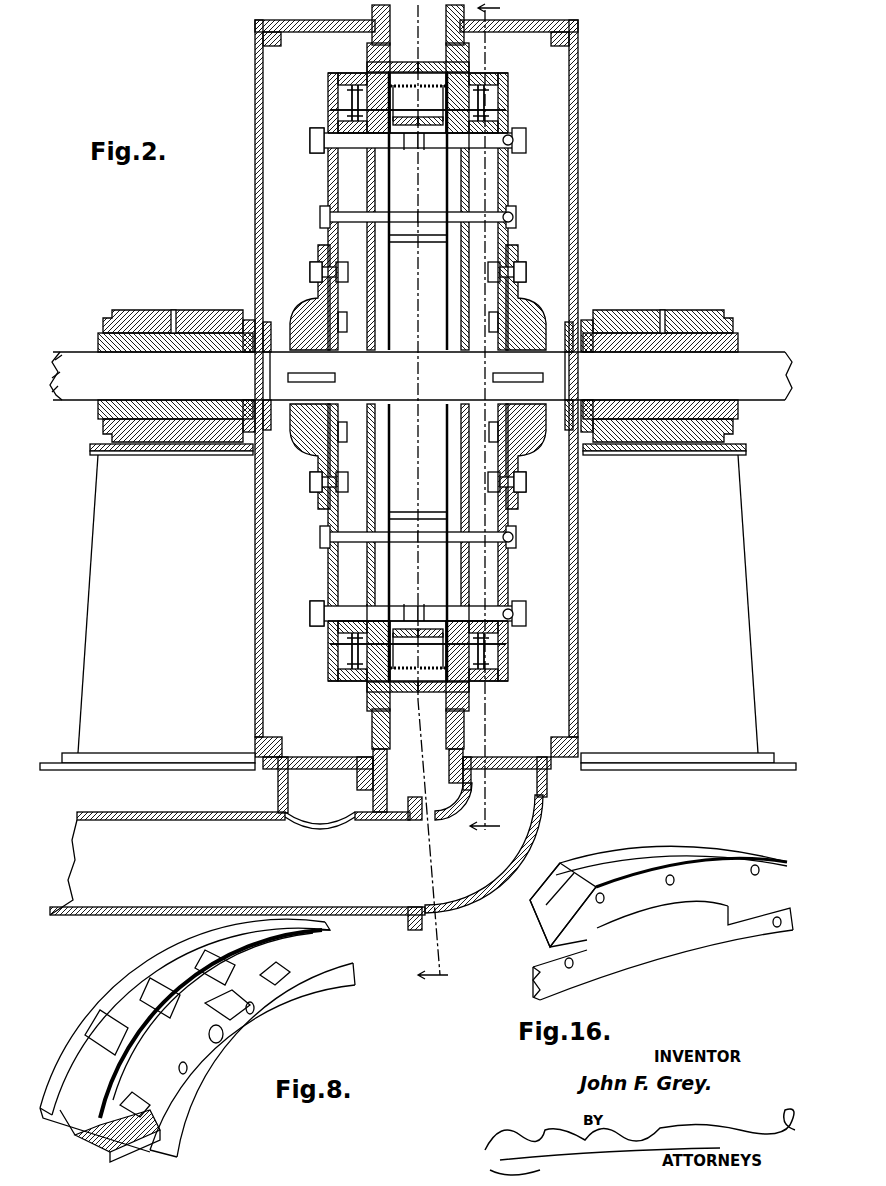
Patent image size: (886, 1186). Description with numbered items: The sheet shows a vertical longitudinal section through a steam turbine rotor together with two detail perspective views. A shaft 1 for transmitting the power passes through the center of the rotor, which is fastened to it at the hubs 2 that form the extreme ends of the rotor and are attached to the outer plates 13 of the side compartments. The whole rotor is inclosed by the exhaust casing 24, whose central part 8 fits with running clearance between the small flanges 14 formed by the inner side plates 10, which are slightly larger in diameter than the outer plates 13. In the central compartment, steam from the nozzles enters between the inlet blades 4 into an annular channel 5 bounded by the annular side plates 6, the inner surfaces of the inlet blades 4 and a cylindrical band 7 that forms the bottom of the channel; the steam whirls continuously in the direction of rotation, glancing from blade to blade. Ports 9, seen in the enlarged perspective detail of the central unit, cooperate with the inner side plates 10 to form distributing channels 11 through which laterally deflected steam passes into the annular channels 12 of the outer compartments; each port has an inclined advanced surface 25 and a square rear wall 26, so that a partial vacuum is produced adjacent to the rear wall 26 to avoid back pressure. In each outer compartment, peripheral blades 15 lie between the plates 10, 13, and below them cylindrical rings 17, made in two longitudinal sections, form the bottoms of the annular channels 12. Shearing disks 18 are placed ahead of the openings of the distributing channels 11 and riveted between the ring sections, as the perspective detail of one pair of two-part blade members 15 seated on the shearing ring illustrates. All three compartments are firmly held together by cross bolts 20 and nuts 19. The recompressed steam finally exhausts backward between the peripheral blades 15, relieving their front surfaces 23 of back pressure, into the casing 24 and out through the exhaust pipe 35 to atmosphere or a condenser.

In FIG. 2, the shaft 1 is at (421, 504).
In FIG. 2, the hubs 2 is at (515, 300).
In FIG. 2, the inlet blades 4 is at (402, 62).
In FIG. 8, the inlet blades 4 is at (115, 982).
In FIG. 2, the annular channel 5 is at (414, 128).
In FIG. 2, the annular side plates 6 is at (389, 257).
In FIG. 8, the annular side plates 6 is at (152, 960).
In FIG. 2, the cylindrical band 7 is at (432, 128).
In FIG. 8, the cylindrical band 7 is at (128, 1148).
In FIG. 2, the central part of the casing 8 is at (438, 62).
In FIG. 2, the ports 9 is at (470, 135).
In FIG. 8, the ports 9 is at (252, 1004).
In FIG. 2, the inner side plates 10 is at (392, 450).
In FIG. 2, the distributing channels 11 is at (330, 110).
In FIG. 2, the annular channels 12 is at (486, 95).
In FIG. 2, the outer plates 13 is at (328, 186).
In FIG. 2, the flanges 14 is at (367, 68).
In FIG. 2, the peripheral blades 15 is at (367, 72).
In FIG. 16, the peripheral blades 15 is at (672, 858).
In FIG. 2, the cylindrical rings 17 is at (322, 140).
In FIG. 2, the shearing disks 18 is at (338, 80).
In FIG. 16, the shearing disks 18 is at (715, 850).
In FIG. 2, the nuts 19 is at (312, 150).
In FIG. 2, the cross bolts 20 is at (508, 145).
In FIG. 16, the front surfaces 23 is at (545, 905).
In FIG. 2, the casing 24 is at (255, 72).
In FIG. 8, the advanced surfaces 25 is at (248, 1026).
In FIG. 8, the rear walls 26 is at (282, 980).
In FIG. 2, the exhaust pipe 35 is at (238, 822).